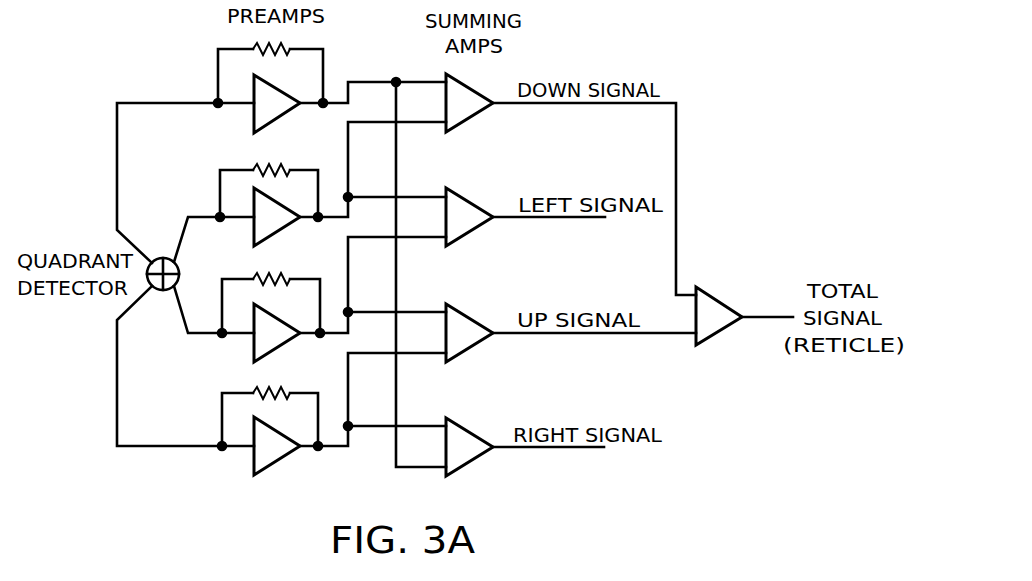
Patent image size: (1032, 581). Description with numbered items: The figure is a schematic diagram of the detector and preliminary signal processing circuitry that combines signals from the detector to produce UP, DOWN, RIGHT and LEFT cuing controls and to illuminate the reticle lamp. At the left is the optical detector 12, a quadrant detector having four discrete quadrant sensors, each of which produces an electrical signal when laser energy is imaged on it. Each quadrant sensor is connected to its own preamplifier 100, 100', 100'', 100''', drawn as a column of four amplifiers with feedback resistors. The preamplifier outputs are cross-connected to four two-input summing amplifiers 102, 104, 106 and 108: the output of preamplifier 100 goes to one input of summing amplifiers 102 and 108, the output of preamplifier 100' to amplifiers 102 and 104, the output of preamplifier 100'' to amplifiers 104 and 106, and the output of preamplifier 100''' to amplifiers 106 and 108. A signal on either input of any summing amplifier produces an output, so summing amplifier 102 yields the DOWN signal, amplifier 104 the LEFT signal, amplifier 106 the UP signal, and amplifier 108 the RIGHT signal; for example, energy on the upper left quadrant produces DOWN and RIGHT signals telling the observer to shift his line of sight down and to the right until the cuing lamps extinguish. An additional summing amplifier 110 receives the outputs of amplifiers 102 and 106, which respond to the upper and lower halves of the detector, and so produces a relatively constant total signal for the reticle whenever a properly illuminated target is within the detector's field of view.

The optical detector 12 is at (180, 262).
The preamplifier 100 is at (273, 92).
The preamplifier 100' is at (276, 208).
The preamplifier 100'' is at (275, 319).
The preamplifier 100''' is at (282, 434).
The summing amplifier 102 is at (463, 122).
The summing amplifier 104 is at (463, 236).
The summing amplifier 106 is at (463, 352).
The summing amplifier 108 is at (463, 466).
The summing amplifier 110 is at (710, 298).